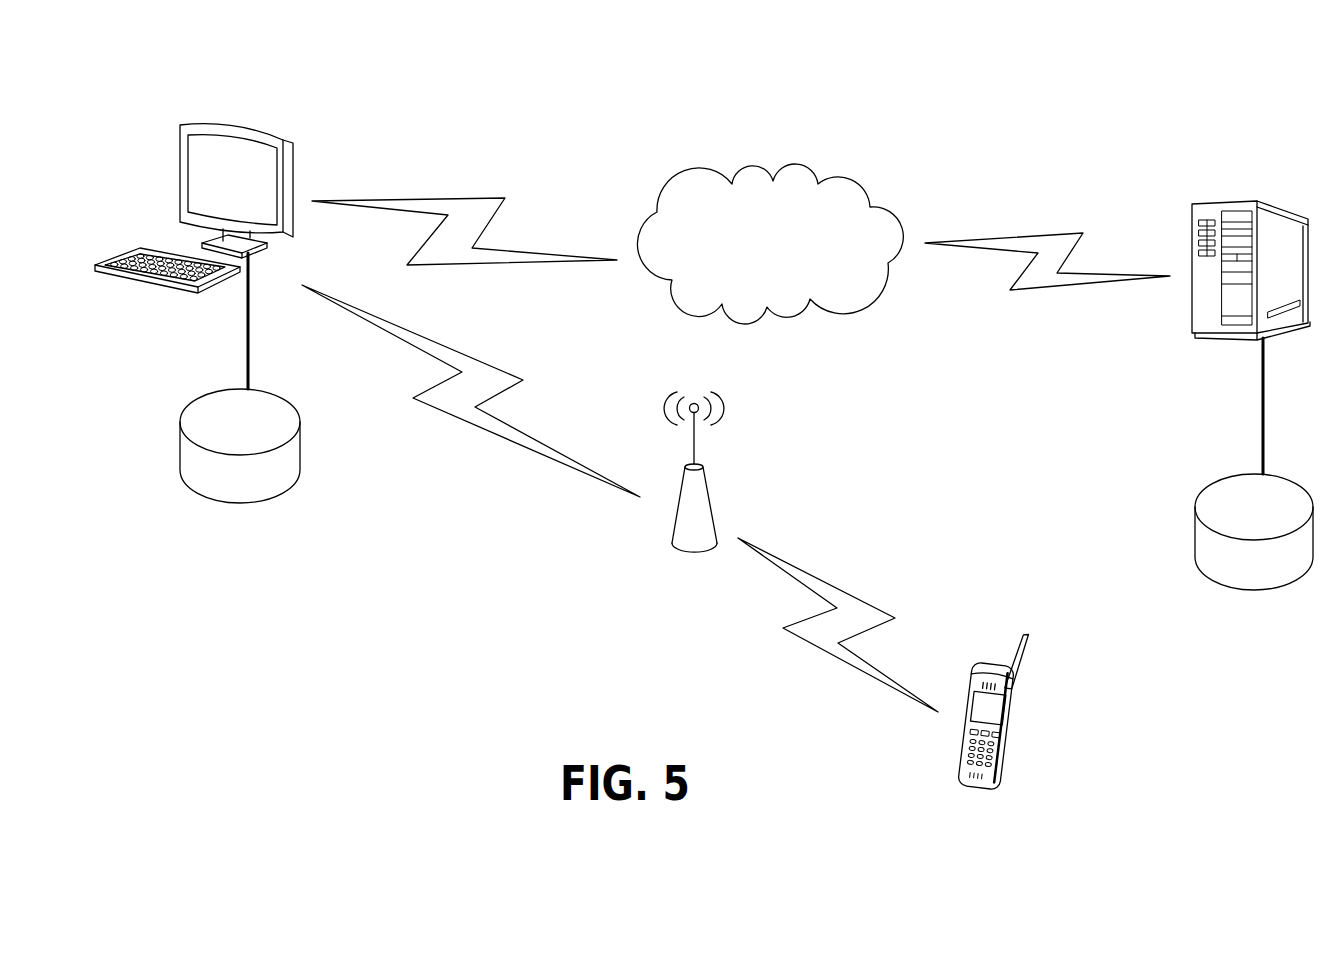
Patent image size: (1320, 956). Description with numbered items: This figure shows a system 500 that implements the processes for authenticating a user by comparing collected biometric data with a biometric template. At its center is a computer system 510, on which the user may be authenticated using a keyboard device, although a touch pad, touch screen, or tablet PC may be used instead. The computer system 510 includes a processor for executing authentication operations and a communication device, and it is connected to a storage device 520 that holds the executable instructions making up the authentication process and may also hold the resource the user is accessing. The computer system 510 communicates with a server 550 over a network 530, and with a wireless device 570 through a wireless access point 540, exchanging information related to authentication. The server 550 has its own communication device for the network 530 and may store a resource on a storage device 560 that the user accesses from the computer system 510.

The system 500 is at (336, 714).
The computer system 510 is at (253, 128).
The storage device 520 is at (238, 510).
The network 530 is at (808, 160).
The wireless access point 540 is at (670, 543).
The server 550 is at (1223, 200).
The storage device 560 is at (1193, 545).
The wireless device 570 is at (1023, 703).